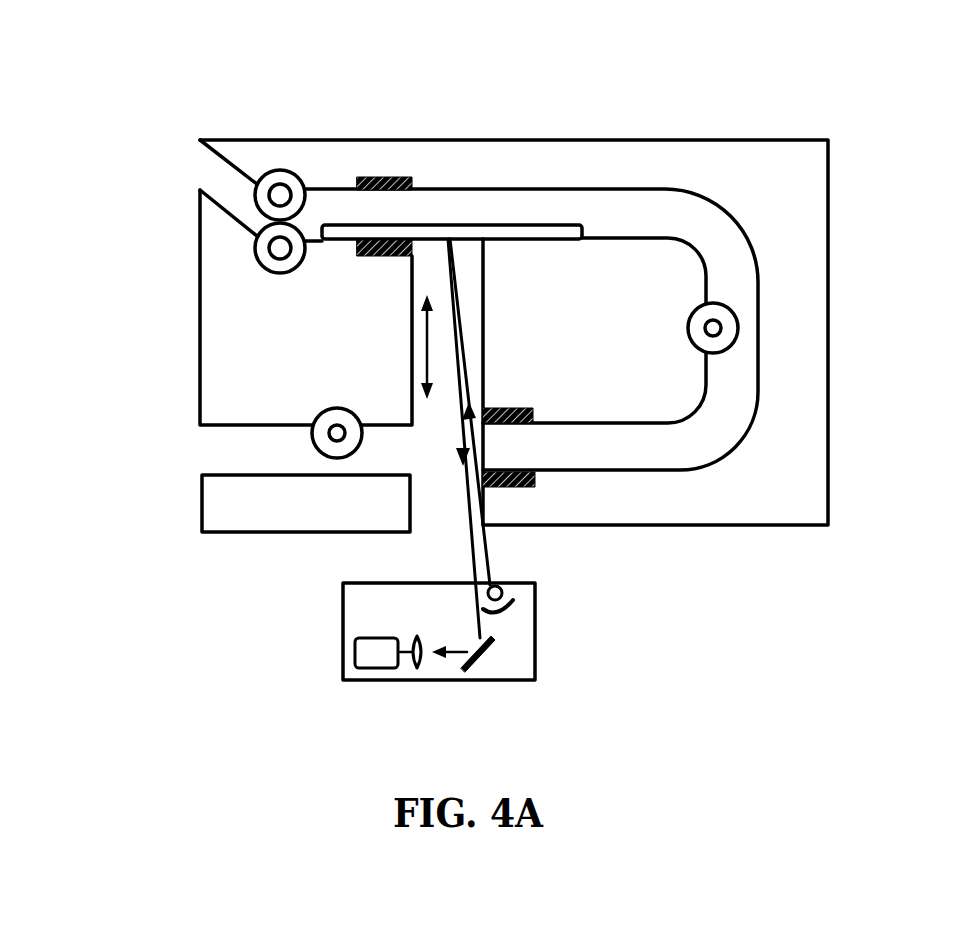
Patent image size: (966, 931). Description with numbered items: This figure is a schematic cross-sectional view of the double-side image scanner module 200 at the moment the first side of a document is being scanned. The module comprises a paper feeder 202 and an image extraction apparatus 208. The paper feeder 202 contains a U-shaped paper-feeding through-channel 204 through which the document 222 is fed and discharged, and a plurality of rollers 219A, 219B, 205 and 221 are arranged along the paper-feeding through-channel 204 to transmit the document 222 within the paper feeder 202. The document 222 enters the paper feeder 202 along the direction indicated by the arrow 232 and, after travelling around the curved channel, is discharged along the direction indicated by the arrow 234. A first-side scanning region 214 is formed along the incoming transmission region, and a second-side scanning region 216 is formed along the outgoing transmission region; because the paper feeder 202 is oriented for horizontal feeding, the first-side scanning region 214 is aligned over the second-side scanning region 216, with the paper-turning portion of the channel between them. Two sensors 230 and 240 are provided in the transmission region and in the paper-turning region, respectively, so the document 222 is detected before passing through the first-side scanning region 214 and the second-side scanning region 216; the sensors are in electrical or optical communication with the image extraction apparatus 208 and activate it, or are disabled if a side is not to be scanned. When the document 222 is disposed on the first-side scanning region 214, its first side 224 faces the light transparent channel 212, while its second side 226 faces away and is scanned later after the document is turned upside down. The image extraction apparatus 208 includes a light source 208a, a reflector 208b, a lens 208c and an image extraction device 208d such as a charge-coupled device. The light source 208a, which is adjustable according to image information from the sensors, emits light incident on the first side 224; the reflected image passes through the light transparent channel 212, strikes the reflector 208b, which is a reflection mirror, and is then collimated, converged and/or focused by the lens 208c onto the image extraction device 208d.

The double-side image scanner module 200 is at (180, 330).
The paper feeder 202 is at (828, 313).
The paper-feeding through-channel 204 is at (632, 208).
The roller 205 is at (716, 303).
The image extraction apparatus 208 is at (443, 490).
The light source 208a is at (537, 608).
The reflector 208b is at (497, 657).
The lens 208c is at (422, 672).
The image extraction device 208d is at (355, 653).
The light transparent channel 212 is at (435, 347).
The first-side scanning region 214 is at (530, 327).
The second-side scanning region 216 is at (307, 484).
The roller 219A is at (298, 188).
The roller 219B is at (272, 269).
The roller 221 is at (337, 408).
The document 222 is at (583, 229).
The first side 224 is at (530, 249).
The second side 226 is at (456, 212).
The sensor 230 is at (367, 258).
The arrow 232 is at (220, 179).
The arrow 234 is at (237, 452).
The sensor 240 is at (515, 487).